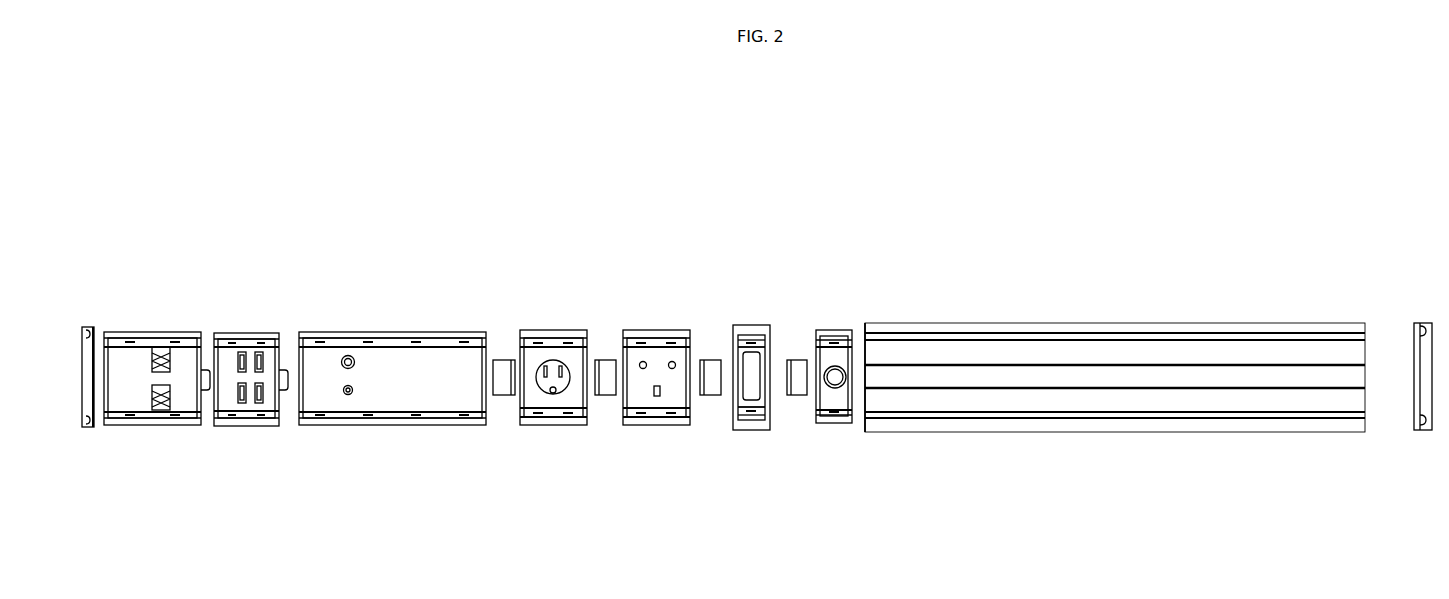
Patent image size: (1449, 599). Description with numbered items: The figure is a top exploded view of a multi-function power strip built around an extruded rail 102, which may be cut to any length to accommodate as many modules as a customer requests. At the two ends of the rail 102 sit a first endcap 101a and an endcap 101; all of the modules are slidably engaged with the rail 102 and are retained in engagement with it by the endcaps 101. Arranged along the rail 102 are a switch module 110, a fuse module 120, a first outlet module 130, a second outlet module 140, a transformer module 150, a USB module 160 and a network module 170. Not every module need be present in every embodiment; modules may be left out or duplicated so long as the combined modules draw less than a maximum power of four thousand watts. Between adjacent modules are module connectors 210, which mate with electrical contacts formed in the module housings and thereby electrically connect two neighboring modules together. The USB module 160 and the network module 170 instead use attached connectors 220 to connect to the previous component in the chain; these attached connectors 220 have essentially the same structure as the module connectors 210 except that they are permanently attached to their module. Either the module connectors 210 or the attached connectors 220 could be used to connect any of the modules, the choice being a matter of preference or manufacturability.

The endcap 101 is at (86, 328).
The first endcap 101a is at (1424, 403).
The rail 102 is at (1047, 403).
The switch module 110 is at (828, 338).
The fuse module 120 is at (743, 338).
The first outlet module 130 is at (650, 338).
The second outlet module 140 is at (555, 338).
The transformer module 150 is at (387, 337).
The USB module 160 is at (256, 372).
The network module 170 is at (152, 340).
The module connectors 210 is at (797, 400).
The attached connectors 220 is at (275, 424).